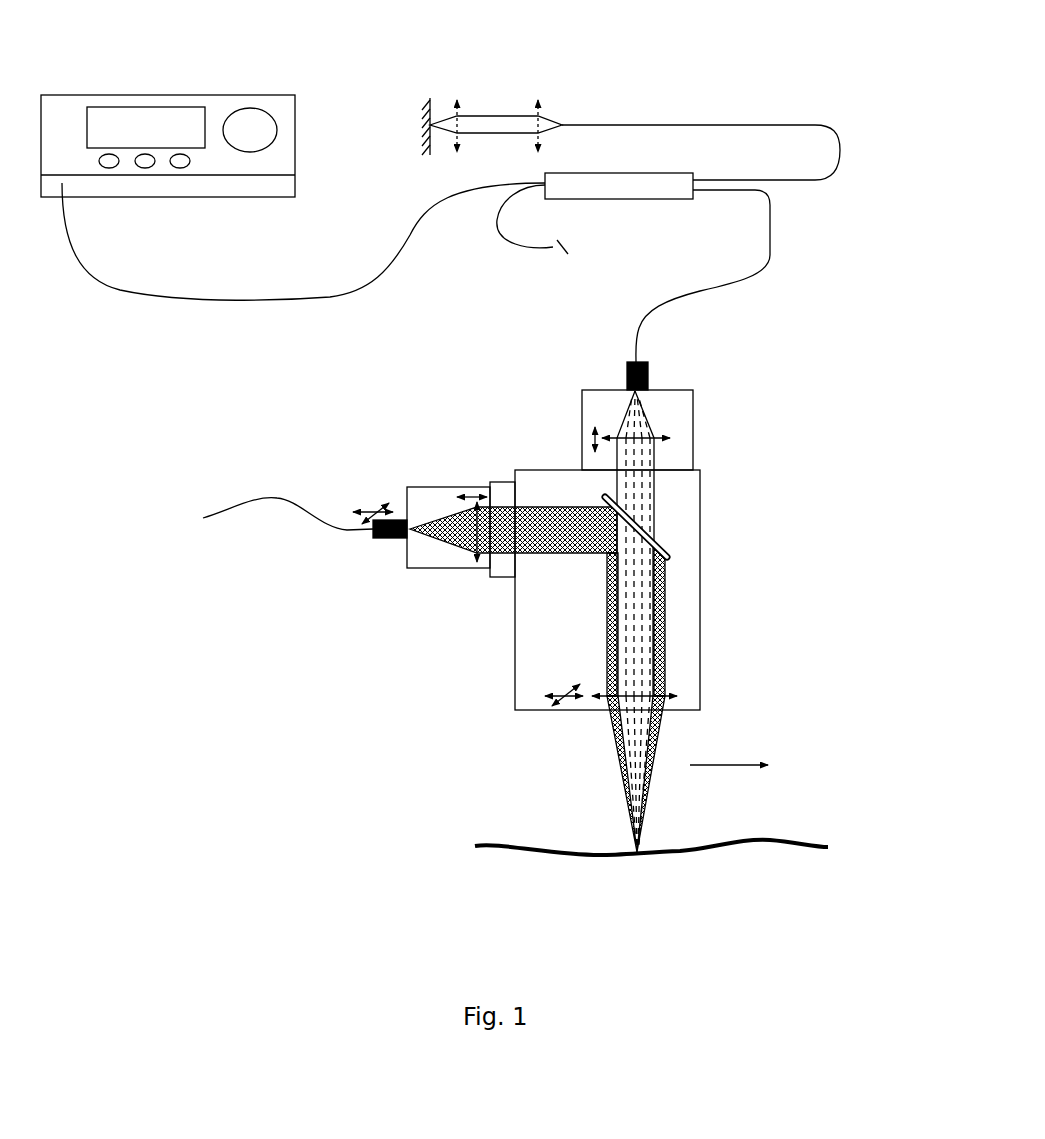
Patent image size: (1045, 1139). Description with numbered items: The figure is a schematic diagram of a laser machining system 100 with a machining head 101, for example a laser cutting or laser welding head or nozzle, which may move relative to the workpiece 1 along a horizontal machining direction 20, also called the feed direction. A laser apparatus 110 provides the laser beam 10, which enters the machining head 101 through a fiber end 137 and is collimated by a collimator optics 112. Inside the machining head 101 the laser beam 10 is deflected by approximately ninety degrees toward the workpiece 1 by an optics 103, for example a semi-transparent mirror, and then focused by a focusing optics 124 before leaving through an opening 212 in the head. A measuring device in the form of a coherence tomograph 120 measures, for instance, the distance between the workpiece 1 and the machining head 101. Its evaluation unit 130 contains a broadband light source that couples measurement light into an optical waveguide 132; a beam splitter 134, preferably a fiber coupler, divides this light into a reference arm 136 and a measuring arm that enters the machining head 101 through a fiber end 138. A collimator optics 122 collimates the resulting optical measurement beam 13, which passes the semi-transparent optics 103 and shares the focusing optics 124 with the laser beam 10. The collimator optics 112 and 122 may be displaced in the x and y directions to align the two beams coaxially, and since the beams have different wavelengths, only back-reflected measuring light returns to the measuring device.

The laser machining system 100 is at (871, 37).
The evaluation unit 130 is at (297, 103).
The optical waveguide 132 is at (337, 302).
The beam splitter 134 is at (677, 207).
The reference arm 136 is at (685, 125).
The coherence tomograph 120 is at (828, 204).
The fiber end 138 is at (648, 376).
The collimator optics 122 is at (673, 442).
The machining head 101 is at (700, 597).
The laser beam 10 is at (607, 613).
The laser apparatus 110 is at (359, 575).
The fiber end 137 is at (373, 540).
The collimator optics 112 is at (467, 493).
The optical measurement beam 13 is at (657, 522).
The optics 103 is at (665, 558).
The focusing optics 124 is at (678, 700).
The opening 212 is at (620, 760).
The machining direction 20 is at (728, 772).
The workpiece 1 is at (797, 843).